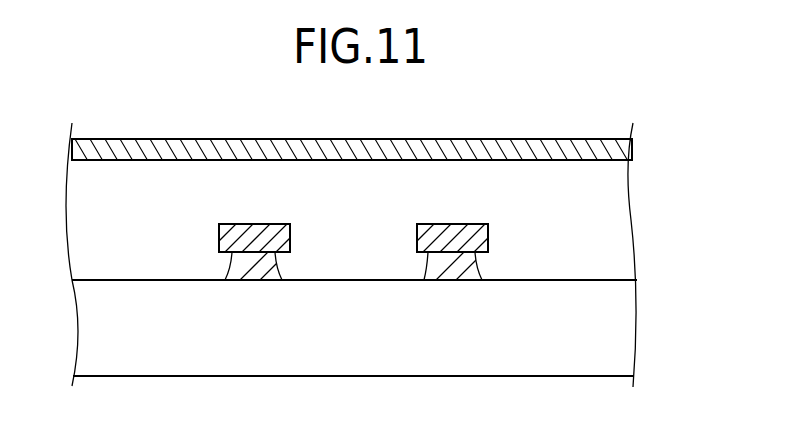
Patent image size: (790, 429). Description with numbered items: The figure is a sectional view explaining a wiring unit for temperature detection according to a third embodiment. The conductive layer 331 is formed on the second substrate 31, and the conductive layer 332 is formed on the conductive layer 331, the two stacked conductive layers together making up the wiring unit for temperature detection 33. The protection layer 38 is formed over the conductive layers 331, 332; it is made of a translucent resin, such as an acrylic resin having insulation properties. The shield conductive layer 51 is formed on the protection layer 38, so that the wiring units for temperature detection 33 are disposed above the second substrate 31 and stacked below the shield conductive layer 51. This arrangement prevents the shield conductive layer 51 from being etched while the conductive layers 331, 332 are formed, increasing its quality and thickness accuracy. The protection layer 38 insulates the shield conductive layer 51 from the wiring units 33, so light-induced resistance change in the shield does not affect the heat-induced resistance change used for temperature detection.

The shield conductive layer 51 is at (627, 143).
The protection layer 38 is at (613, 252).
The second substrate 31 is at (618, 328).
The wiring unit for temperature detection 33 is at (350, 232).
The conductive layer 332 is at (225, 238).
The conductive layer 331 is at (232, 268).